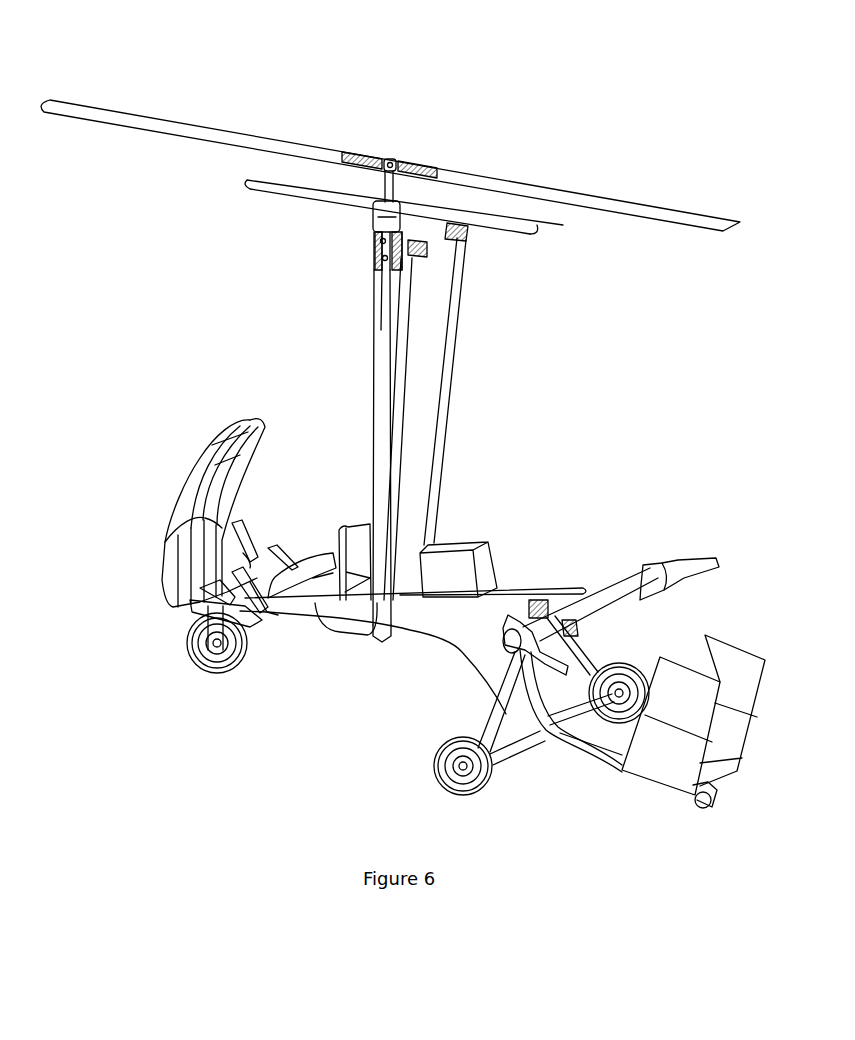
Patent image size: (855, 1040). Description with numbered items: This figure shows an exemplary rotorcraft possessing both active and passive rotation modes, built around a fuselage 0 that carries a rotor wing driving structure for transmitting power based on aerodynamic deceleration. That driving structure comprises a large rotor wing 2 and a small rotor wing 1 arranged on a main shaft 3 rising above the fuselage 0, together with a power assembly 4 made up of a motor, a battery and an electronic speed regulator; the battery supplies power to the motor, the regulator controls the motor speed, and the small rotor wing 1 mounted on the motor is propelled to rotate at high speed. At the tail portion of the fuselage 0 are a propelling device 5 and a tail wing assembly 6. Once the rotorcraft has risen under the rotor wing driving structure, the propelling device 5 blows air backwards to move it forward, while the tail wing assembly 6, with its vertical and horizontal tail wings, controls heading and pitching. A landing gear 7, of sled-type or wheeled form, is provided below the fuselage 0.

The fuselage 0 is at (478, 455).
The small rotor wing 1 is at (285, 192).
The large rotor wing 2 is at (141, 125).
The main shaft 3 is at (558, 222).
The power assembly 4 is at (372, 220).
The propelling device 5 is at (683, 573).
The tail wing assembly 6 is at (733, 667).
The landing gear 7 is at (428, 748).